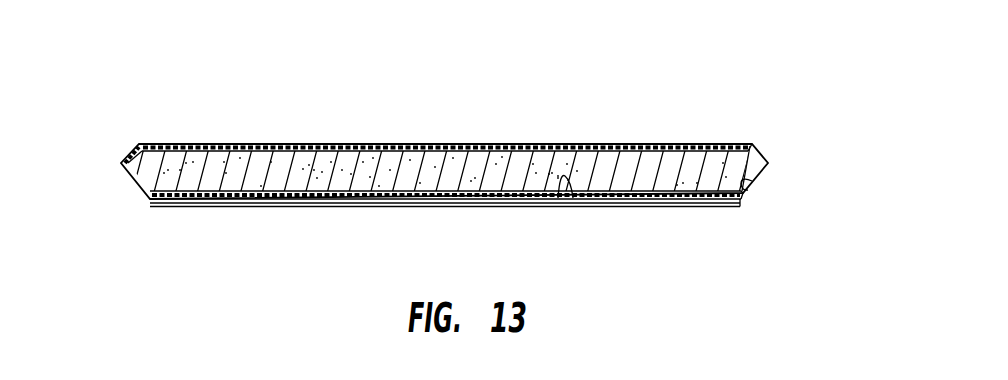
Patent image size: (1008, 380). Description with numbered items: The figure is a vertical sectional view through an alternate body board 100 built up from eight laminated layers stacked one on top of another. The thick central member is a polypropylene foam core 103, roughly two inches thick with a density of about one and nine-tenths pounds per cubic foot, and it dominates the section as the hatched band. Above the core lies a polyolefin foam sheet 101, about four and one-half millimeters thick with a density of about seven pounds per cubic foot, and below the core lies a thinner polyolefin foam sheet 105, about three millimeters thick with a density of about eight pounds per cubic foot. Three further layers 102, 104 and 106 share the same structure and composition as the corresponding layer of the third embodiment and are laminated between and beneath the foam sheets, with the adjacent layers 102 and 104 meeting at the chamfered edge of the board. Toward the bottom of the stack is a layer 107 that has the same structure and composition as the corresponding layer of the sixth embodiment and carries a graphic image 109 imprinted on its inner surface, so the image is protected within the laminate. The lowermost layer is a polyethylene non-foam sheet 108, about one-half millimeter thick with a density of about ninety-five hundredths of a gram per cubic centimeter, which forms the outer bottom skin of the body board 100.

The body board 100 is at (155, 97).
The polyolefin foam sheet layer 101 is at (657, 143).
The laminated layer 102 is at (756, 146).
The polypropylene foam core 103 is at (740, 168).
The laminated layer 104 is at (752, 181).
The polyolefin foam sheet layer 105 is at (750, 197).
The laminated layer 106 is at (703, 203).
The layer with graphic image 107 is at (652, 203).
The polyethylene non-foam sheet layer 108 is at (607, 203).
The graphic image 109 is at (558, 198).